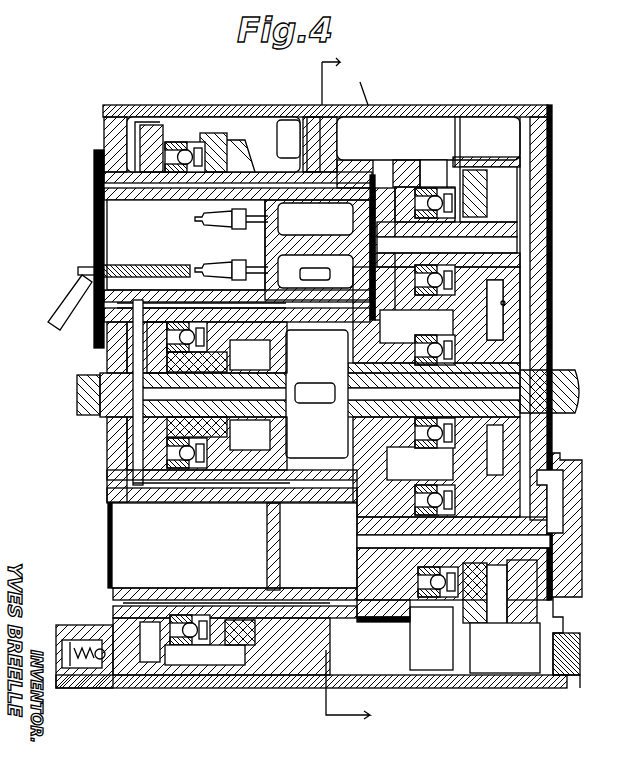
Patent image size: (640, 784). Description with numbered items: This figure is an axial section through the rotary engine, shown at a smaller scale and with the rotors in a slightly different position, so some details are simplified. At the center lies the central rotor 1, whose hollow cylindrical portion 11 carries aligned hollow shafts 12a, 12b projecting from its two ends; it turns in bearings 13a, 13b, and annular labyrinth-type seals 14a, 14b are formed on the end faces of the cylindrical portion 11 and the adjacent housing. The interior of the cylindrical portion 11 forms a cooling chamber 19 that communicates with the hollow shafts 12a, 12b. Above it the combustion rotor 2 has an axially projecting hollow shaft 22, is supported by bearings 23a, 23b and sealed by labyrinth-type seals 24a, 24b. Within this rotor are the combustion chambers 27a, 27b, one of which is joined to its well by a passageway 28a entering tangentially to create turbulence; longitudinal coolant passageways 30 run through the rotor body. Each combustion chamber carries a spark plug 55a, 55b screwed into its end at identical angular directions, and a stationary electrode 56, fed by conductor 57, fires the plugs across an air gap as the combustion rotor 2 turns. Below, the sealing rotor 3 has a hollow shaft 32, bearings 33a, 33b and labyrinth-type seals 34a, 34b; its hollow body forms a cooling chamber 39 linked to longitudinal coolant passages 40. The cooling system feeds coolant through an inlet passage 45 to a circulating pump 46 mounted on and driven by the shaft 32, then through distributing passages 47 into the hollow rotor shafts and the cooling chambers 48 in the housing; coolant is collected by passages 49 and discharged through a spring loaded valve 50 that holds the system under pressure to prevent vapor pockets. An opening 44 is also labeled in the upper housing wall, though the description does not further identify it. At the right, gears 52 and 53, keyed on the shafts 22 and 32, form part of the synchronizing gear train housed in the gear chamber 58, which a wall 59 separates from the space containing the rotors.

The central rotor 1 is at (339, 399).
The combustion rotor 2 is at (150, 225).
The sealing rotor 3 is at (350, 620).
The central hollow cylindrical portion 11 is at (288, 410).
The hollow shaft 12a is at (76, 390).
The hollow shaft 12b is at (575, 375).
The bearing 13a is at (150, 425).
The bearing 13b is at (436, 467).
The annular labyrinth-type seal 14a is at (286, 348).
The annular labyrinth-type seal 14b is at (352, 350).
The cooling chamber 19 is at (342, 456).
The hollow shaft 22 is at (520, 228).
The bearing 23a is at (185, 150).
The bearing 23b is at (430, 190).
The annular labyrinth-type seal 24a is at (225, 135).
The annular labyrinth-type seal 24b is at (400, 165).
The combustion chamber 27a is at (262, 257).
The combustion chamber 27b is at (352, 219).
The passageway 28a is at (312, 286).
The coolant passageway 30 is at (128, 195).
The hollow shaft 32 is at (568, 550).
The bearing 33a is at (196, 660).
The bearing 33b is at (436, 610).
The labyrinth-type seal 34a is at (240, 625).
The labyrinth-type seal 34b is at (395, 620).
The cooling chamber 39 is at (325, 510).
The coolant passage 40 is at (186, 600).
The passage 44 is at (313, 133).
The inlet passage 45 is at (565, 650).
The circulating pump 46 is at (560, 508).
The distributing passage 47 is at (575, 465).
The cooling chamber 48 is at (522, 118).
The passage 49 is at (138, 455).
The spring loaded valve 50 is at (104, 660).
The gear 52 is at (490, 170).
The gear 53 is at (512, 630).
The spark plug 55a is at (203, 262).
The spark plug 55b is at (196, 217).
The stationary electrode 56 is at (162, 265).
The conductor 57 is at (62, 306).
The gear chamber 58 is at (502, 303).
The wall 59 is at (457, 165).